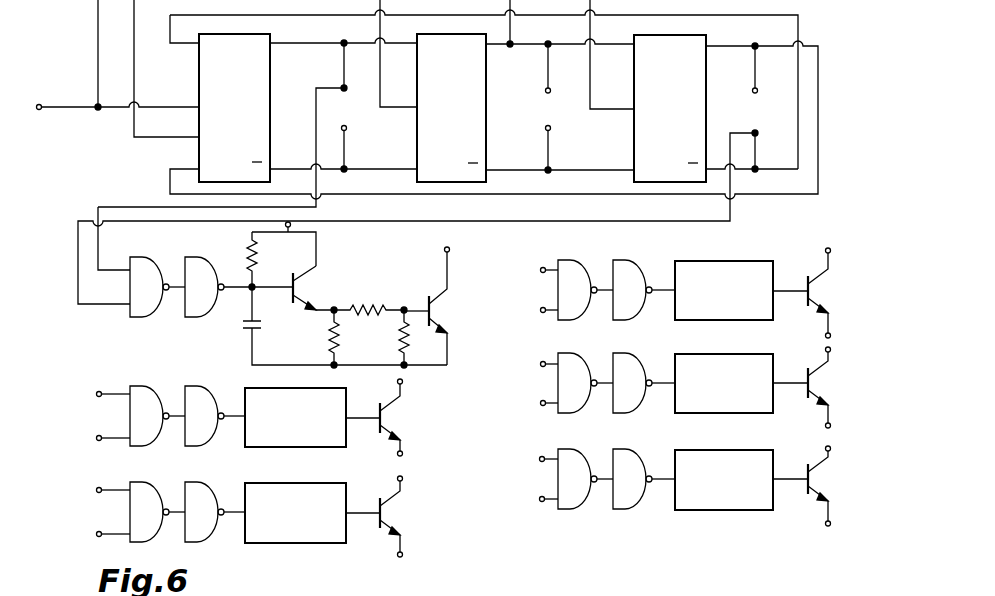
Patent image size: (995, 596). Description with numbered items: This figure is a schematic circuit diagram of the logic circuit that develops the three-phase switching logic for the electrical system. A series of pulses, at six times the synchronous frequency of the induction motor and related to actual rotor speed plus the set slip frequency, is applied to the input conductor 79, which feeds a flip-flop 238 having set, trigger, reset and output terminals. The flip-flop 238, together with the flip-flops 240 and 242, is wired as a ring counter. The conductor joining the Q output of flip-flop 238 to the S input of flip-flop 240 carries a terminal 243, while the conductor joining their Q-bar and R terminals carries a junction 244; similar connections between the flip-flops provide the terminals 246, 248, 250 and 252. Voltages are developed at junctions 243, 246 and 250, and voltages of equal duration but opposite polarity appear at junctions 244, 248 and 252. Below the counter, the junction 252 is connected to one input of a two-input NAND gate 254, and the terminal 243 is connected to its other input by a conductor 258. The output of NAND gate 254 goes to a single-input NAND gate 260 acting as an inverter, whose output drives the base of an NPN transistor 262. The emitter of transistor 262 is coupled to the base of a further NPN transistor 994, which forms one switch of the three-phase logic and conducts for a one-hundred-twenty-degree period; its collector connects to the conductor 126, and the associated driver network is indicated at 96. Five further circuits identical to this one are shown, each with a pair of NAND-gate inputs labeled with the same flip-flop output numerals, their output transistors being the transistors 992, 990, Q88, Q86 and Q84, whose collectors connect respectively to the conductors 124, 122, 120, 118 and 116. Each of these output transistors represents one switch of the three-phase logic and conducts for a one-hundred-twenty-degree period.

The input conductor 79 is at (83, 109).
The flip-flop 238 is at (199, 97).
The flip-flop 240 is at (486, 105).
The flip-flop 242 is at (706, 90).
The terminal 243 is at (344, 88).
The junction 244 is at (346, 127).
The terminal 246 is at (549, 93).
The terminal 248 is at (546, 128).
The terminal 250 is at (754, 93).
The terminal 252 is at (770, 125).
The two input NAND gate 254 is at (160, 317).
The conductor 258 is at (316, 199).
The single input NAND gate 260 is at (218, 245).
The NPN transistor 262 is at (300, 293).
The conductor 126 is at (446, 253).
The transistor 994 is at (461, 299).
The driver circuit 96 is at (421, 371).
The conductor 124 is at (397, 382).
The transistor 992 is at (385, 421).
The conductor 122 is at (402, 478).
The transistor 990 is at (385, 515).
The transistor Q88 is at (822, 273).
The conductor 120 is at (831, 251).
The conductor 118 is at (825, 350).
The transistor Q86 is at (814, 391).
The conductor 116 is at (831, 448).
The transistor Q84 is at (812, 489).